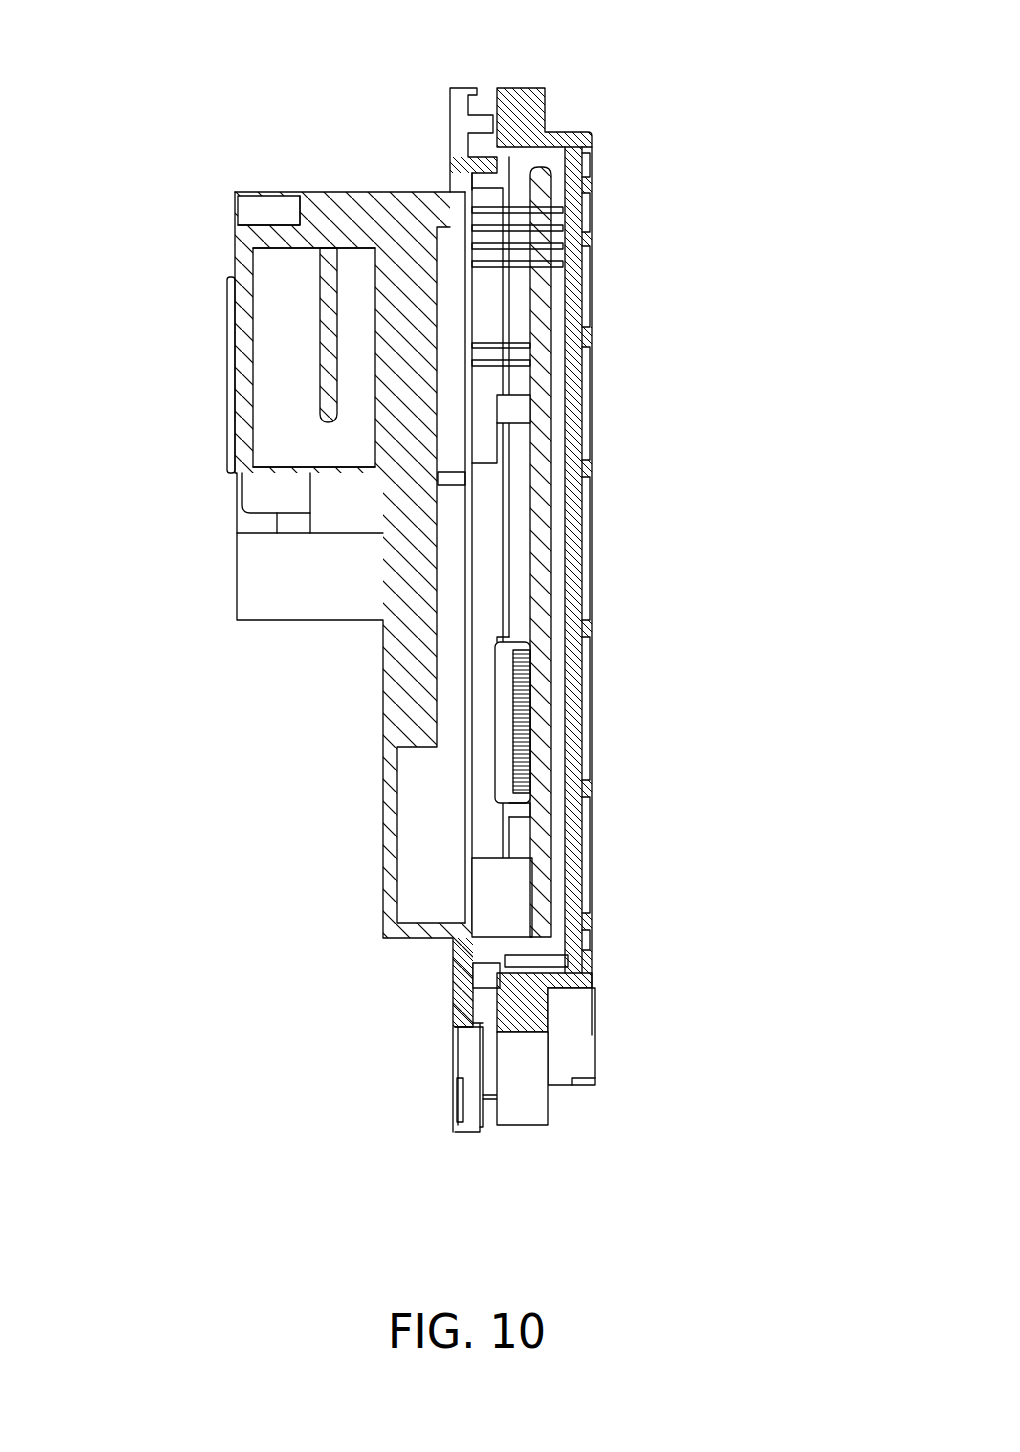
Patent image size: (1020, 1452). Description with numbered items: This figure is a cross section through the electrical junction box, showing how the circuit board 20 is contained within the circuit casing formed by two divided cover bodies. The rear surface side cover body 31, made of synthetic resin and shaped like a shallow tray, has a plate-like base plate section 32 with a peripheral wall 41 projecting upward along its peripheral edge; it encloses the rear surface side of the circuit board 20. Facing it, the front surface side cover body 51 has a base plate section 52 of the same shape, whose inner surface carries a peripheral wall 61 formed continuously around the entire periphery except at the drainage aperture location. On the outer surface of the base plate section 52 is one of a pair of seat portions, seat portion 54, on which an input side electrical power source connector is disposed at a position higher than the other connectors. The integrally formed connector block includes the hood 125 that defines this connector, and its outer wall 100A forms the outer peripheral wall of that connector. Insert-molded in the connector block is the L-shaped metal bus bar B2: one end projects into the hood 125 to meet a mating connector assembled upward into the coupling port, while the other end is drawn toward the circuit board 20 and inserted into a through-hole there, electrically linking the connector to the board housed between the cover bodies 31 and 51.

The outer wall 100A is at (231, 278).
The hood 125 is at (263, 357).
The bus bar B2 is at (388, 213).
The peripheral wall 61 is at (480, 125).
The peripheral wall 41 is at (532, 113).
The circuit board 20 is at (540, 290).
The base plate section 32 is at (577, 537).
The rear surface side cover body 31 is at (669, 591).
The seat portion 54 is at (407, 700).
The base plate section 52 is at (465, 977).
The front surface side cover body 51 is at (356, 982).